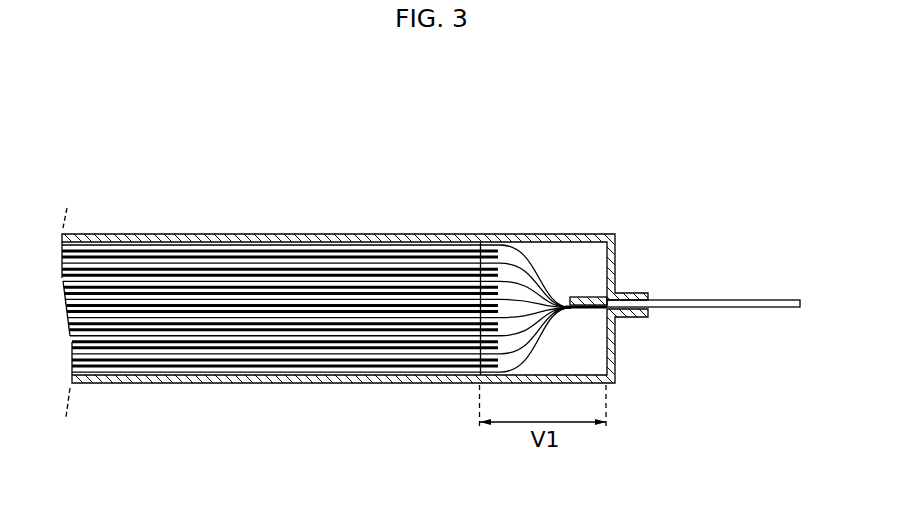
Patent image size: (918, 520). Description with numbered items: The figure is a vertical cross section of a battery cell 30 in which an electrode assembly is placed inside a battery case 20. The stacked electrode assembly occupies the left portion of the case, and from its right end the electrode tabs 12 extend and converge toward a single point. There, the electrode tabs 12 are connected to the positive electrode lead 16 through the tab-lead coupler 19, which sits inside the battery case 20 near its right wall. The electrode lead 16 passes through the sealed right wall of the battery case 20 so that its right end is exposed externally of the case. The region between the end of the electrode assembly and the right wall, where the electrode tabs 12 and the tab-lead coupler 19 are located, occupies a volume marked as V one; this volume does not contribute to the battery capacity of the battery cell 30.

The battery cell 30 is at (100, 96).
The electrode tabs 12 is at (539, 260).
The battery case 20 is at (596, 234).
The tab-lead coupler 19 is at (592, 297).
The positive electrode lead 16 is at (763, 300).